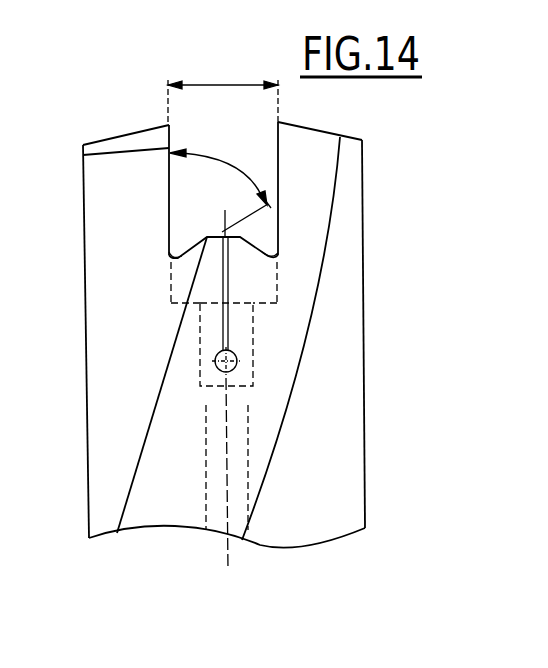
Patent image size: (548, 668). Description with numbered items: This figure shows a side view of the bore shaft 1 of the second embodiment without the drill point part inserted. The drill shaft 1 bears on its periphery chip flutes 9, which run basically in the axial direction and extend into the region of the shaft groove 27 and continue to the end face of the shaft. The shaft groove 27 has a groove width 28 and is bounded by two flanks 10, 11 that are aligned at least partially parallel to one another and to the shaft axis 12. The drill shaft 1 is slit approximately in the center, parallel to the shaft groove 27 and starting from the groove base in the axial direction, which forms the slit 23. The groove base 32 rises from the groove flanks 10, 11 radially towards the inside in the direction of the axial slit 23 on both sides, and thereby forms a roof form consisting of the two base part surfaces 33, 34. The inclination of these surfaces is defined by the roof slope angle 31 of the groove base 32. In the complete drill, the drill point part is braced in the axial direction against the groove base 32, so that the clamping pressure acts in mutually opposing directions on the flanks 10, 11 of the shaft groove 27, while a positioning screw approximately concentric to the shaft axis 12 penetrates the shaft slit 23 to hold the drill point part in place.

The bore shaft 1 is at (366, 437).
The chip flutes 9 is at (165, 472).
The flank 10 is at (172, 188).
The flank 11 is at (277, 158).
The shaft axis 12 is at (228, 558).
The slit 23 is at (227, 327).
The shaft groove 27 is at (216, 208).
The groove width 28 is at (225, 83).
The roof slope angle 31 is at (224, 167).
The groove base 32 is at (255, 232).
The base part surface 33 is at (282, 247).
The base part surface 34 is at (175, 255).